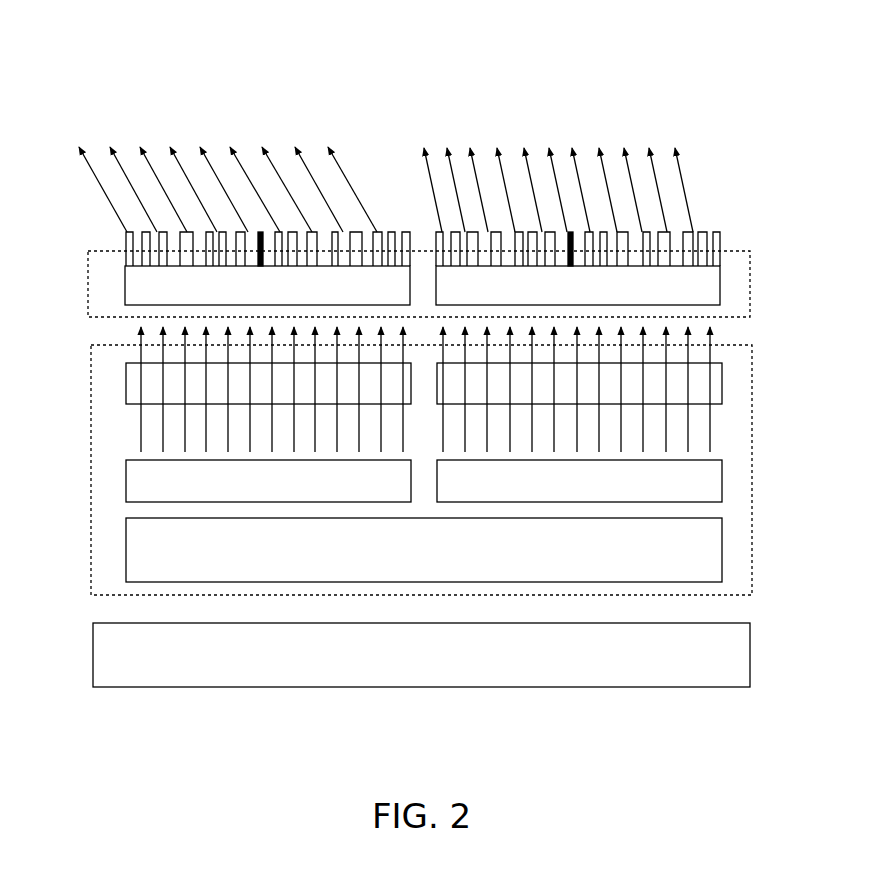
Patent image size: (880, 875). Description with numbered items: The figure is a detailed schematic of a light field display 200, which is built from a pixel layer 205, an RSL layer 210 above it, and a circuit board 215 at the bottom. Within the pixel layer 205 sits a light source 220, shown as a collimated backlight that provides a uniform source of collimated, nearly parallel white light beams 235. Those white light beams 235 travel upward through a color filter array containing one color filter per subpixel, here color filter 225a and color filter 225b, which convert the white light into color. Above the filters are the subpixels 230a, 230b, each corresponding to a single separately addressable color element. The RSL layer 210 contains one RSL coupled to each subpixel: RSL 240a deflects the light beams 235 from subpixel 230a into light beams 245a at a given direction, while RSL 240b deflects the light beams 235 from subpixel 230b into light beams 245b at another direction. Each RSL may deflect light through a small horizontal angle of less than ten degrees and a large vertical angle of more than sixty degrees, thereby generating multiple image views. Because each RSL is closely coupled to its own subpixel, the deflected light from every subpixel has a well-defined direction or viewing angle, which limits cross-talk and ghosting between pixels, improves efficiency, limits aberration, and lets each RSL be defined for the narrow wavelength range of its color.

The light field display 200 is at (404, 82).
The pixel layer 205 is at (91, 527).
The RSL layer 210 is at (89, 296).
The circuit board 215 is at (93, 655).
The light source 220 is at (722, 553).
The color filter 225a is at (126, 480).
The color filter 225b is at (722, 477).
The subpixel 230a is at (126, 386).
The subpixel 230b is at (722, 387).
The white light beams 235 is at (710, 433).
The RSL 240a is at (125, 289).
The RSL array 240b is at (719, 285).
The light beams 245a is at (348, 178).
The light beams 245b is at (685, 200).